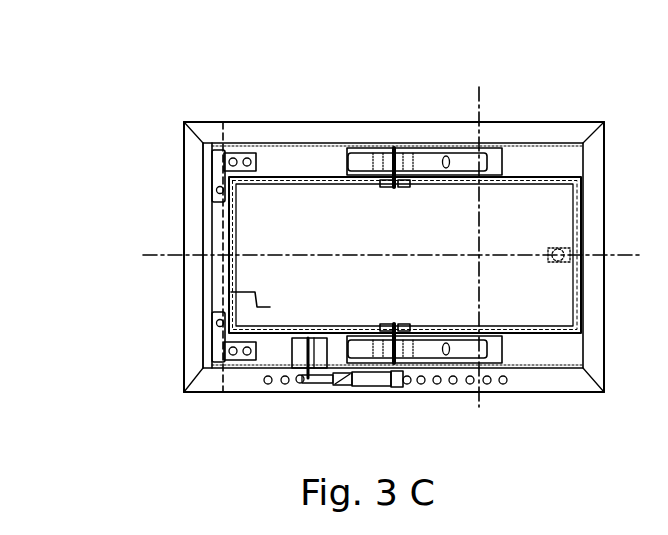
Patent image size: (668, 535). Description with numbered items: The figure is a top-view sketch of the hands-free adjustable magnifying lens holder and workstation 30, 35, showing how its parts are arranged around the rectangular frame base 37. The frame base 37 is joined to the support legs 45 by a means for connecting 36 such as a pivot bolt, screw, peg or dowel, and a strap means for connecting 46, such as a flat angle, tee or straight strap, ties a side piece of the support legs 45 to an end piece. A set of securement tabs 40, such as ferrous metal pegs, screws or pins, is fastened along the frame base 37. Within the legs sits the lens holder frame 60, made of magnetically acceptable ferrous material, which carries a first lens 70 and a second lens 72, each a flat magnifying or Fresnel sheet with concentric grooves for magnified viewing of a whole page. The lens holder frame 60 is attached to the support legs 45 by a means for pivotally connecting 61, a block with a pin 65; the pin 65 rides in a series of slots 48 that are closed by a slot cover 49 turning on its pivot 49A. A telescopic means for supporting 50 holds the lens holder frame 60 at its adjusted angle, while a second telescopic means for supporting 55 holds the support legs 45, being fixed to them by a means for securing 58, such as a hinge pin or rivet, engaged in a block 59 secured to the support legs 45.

The hands-free adjustable magnifying lens holder and workstation 30 is at (320, 322).
The mounting bracket assembly 35 is at (150, 476).
The means for connecting frame base to support legs 36 is at (203, 133).
The frame base 37 is at (291, 122).
The securement tabs 40 is at (261, 381).
The support legs 45 is at (170, 230).
The strap means for connecting 46 is at (229, 143).
The slots 48 is at (350, 152).
The slot cover 49 is at (446, 170).
The pivot for slot cover 49A is at (420, 160).
The means for supporting the lens frame 50 is at (535, 258).
The means for supporting the support legs 55 is at (343, 385).
The means for securing 58 is at (195, 377).
The block 59 is at (278, 343).
The lens holder frame 60 is at (200, 279).
The means for pivotally connecting 61 is at (376, 181).
The pin 65 is at (368, 182).
The lens No. 1 70 is at (166, 340).
The lens No. 2 72 is at (231, 293).